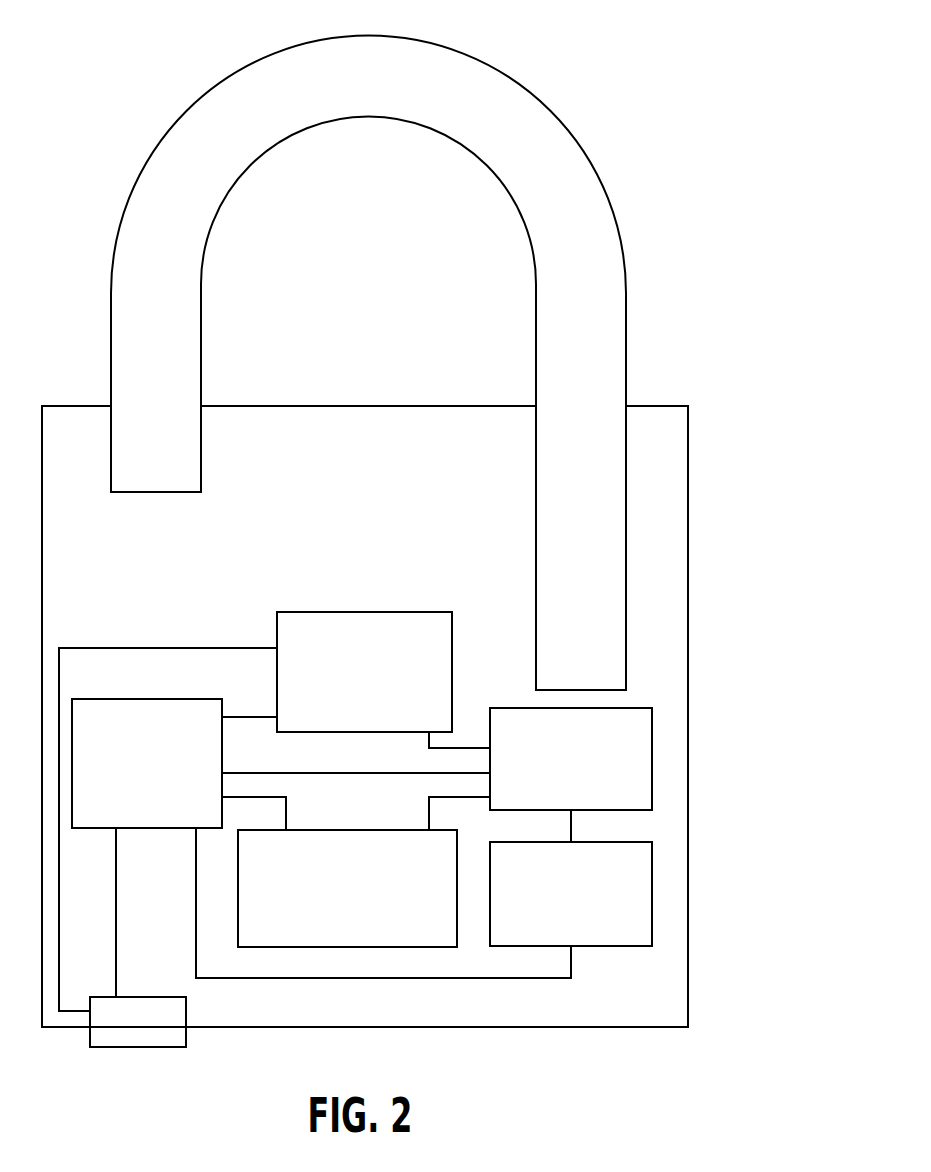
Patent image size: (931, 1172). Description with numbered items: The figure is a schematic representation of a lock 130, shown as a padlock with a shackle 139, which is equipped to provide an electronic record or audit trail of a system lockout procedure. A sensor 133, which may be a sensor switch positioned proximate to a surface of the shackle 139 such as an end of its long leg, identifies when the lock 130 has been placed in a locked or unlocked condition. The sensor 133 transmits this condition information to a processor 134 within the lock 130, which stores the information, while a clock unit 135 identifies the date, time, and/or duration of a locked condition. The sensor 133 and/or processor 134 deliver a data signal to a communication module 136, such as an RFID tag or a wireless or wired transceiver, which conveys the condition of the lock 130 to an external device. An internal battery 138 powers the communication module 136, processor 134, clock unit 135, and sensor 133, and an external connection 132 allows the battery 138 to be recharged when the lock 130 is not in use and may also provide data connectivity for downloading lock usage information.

The lock 130 is at (720, 196).
The external connection 132 is at (114, 1047).
The sensor 133 is at (550, 777).
The processor 134 is at (346, 687).
The clock unit 135 is at (551, 908).
The communication module 136 is at (329, 903).
The battery 138 is at (147, 763).
The shackle 139 is at (493, 63).